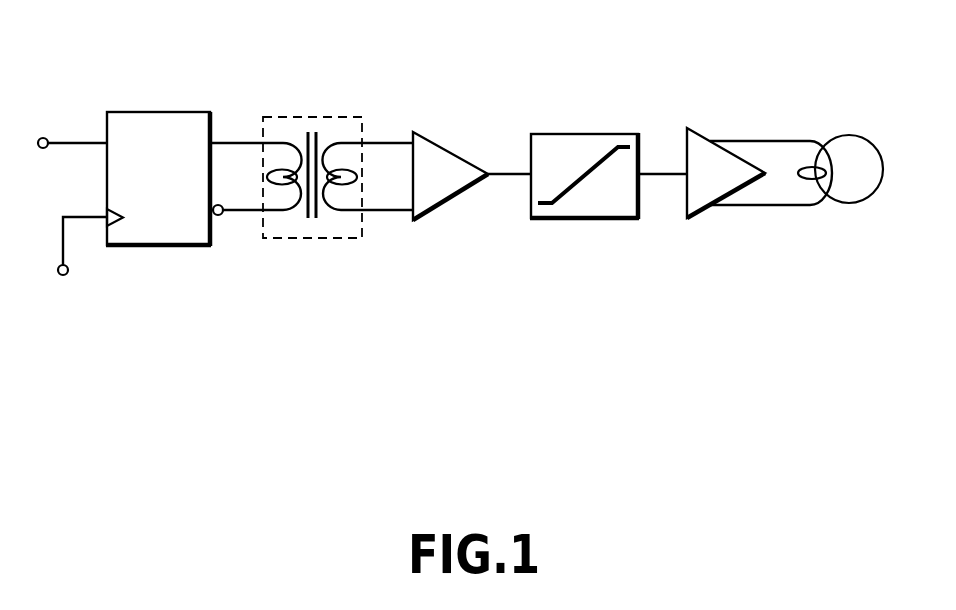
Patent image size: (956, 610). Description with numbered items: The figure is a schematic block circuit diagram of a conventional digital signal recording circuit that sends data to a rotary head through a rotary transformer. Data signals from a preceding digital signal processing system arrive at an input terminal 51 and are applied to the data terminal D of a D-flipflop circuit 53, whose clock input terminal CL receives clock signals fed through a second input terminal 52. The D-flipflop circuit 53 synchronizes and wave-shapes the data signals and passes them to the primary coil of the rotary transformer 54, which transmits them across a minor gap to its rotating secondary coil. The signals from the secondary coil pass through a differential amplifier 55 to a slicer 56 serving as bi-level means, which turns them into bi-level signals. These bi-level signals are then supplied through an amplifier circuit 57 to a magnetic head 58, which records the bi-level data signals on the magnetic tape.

The input terminal 51 is at (44, 137).
The input terminal 52 is at (63, 276).
The D-flipflop circuit 53 is at (140, 111).
The rotary transformer 54 is at (288, 121).
The differential amplifier 55 is at (440, 158).
The slicer 56 is at (567, 148).
The amplifier circuit 57 is at (688, 197).
The magnetic head 58 is at (817, 130).